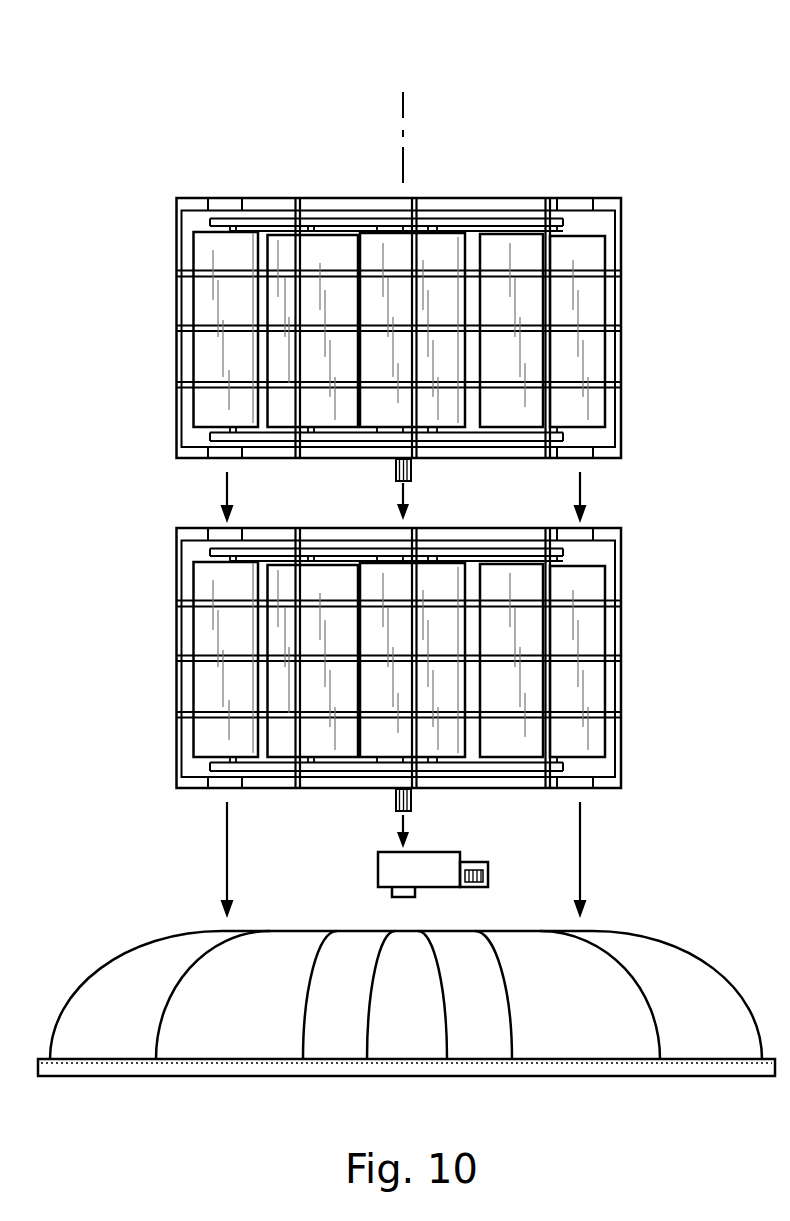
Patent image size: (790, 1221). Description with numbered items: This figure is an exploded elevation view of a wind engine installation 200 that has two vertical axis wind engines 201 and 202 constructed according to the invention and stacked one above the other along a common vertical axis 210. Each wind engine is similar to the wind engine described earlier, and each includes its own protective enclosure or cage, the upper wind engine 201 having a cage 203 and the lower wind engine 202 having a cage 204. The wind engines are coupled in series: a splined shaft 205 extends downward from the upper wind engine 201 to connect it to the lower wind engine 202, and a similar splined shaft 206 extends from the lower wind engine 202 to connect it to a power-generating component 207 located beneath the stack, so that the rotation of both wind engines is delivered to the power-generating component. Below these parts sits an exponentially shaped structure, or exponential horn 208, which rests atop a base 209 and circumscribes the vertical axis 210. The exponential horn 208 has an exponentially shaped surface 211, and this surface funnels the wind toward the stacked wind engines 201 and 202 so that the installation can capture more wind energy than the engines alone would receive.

The wind engine installation 200 is at (100, 103).
The wind engine 201 is at (630, 196).
The wind engine 202 is at (630, 526).
The protective enclosure or cage 203 is at (175, 247).
The protective enclosure or cage 204 is at (175, 577).
The splined shaft 205 is at (411, 467).
The splined shaft 206 is at (411, 798).
The power-generating component 207 is at (378, 865).
The exponential horn 208 is at (146, 930).
The base 209 is at (130, 1077).
The vertical axis 210 is at (403, 104).
The exponentially shaped surface 211 is at (657, 967).